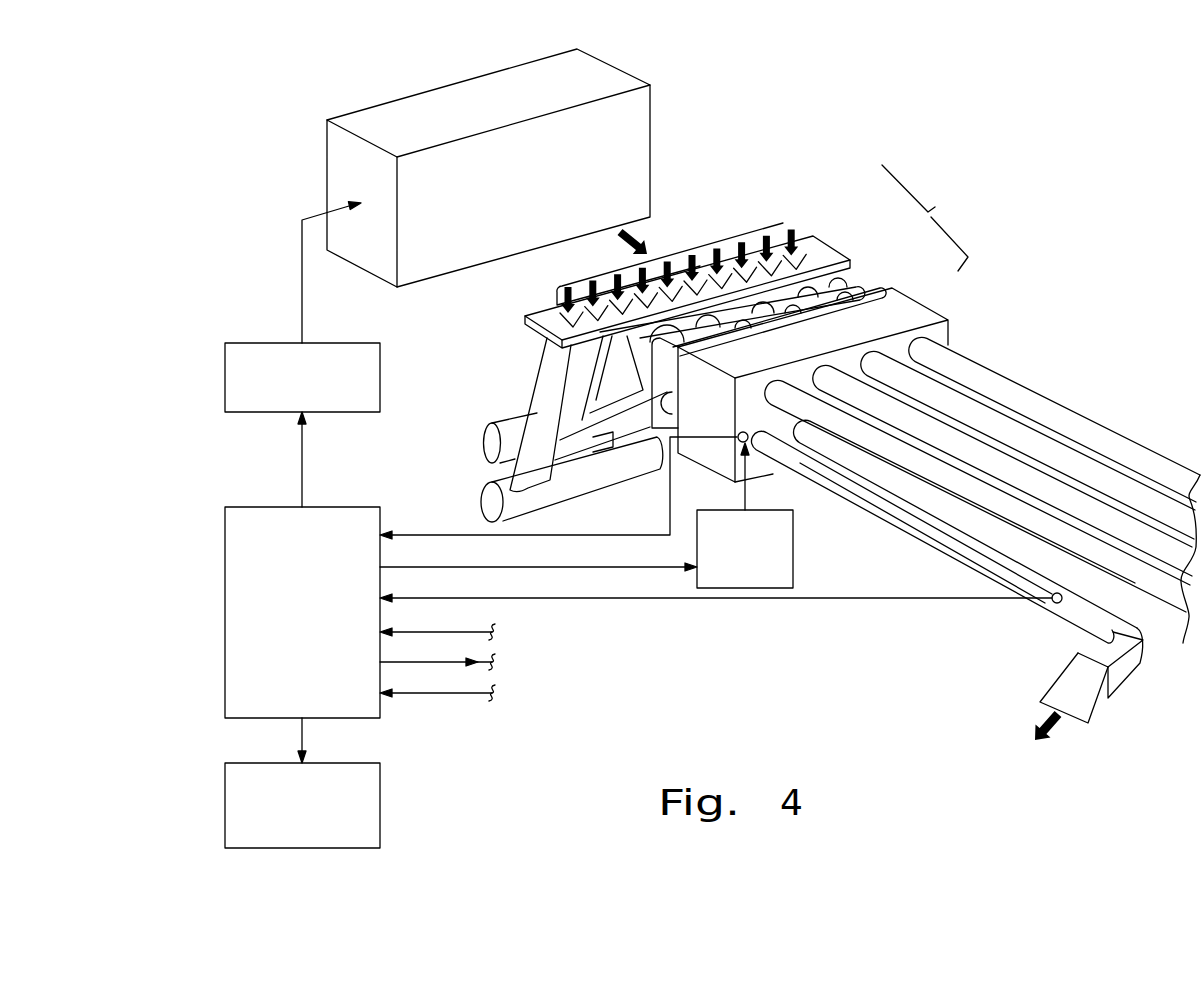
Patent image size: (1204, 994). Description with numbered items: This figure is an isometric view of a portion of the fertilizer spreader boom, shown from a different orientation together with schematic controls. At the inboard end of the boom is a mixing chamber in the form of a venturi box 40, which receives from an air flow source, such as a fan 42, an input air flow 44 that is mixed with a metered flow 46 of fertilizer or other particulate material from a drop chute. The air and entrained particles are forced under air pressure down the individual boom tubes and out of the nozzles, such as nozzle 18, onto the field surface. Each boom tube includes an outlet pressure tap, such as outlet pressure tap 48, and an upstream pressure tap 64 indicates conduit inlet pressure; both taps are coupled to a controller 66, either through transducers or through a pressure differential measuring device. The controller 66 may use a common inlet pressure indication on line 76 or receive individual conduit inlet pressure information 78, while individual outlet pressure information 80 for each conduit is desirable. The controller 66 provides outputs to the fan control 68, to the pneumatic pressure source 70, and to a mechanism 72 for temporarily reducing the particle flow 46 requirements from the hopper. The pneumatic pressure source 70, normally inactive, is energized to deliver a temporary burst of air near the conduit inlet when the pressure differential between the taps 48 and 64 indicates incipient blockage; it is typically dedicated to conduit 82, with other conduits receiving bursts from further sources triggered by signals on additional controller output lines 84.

The nozzle 18 is at (1077, 707).
The venturi box 40 is at (840, 404).
The fan 42 is at (427, 278).
The input air flow 44 is at (620, 244).
The metered flow 46 is at (797, 228).
The outlet pressure tap 48 is at (1053, 605).
The upstream pressure tap 64 is at (743, 431).
The controller 66 is at (233, 507).
The fan control 68 is at (252, 343).
The pneumatic pressure source 70 is at (793, 540).
The mechanism for temporarily reducing the particle flow requirements 72 is at (382, 798).
The line 76 is at (452, 535).
The individual conduit inlet pressure information 78 is at (470, 632).
The individual outlet pressure information 80 is at (452, 693).
The conduit 82 is at (1088, 625).
The additional controller output lines 84 is at (447, 661).